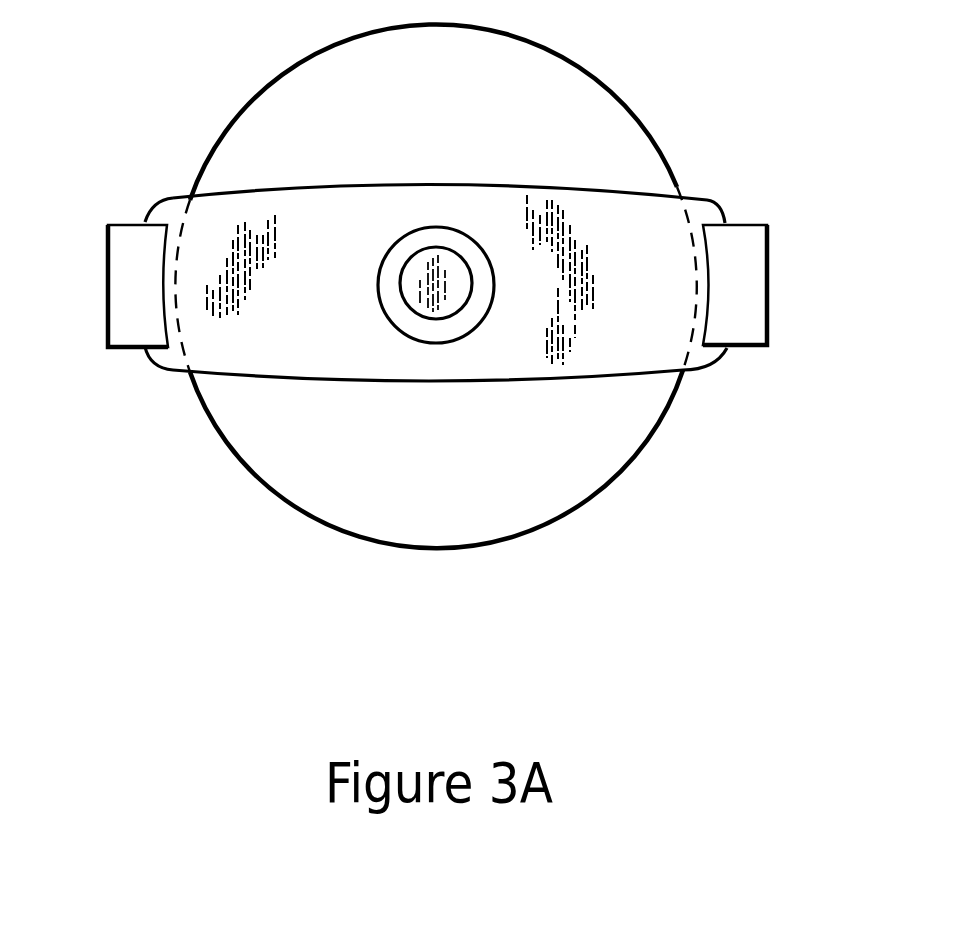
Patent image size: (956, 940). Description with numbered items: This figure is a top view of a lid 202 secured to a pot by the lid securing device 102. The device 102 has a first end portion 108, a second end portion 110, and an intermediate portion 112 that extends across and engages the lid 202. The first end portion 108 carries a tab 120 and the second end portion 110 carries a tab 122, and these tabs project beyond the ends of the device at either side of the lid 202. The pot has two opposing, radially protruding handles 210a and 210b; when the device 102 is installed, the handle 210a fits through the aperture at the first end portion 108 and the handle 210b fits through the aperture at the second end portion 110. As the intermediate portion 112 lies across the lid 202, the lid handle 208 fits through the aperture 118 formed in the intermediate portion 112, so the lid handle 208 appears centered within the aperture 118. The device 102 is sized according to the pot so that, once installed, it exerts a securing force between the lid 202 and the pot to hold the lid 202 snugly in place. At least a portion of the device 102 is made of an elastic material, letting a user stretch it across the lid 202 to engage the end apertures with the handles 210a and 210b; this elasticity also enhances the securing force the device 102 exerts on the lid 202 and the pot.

The lid securing device 102 is at (612, 378).
The first end portion 108 is at (227, 207).
The second end portion 110 is at (670, 208).
The intermediate portion 112 is at (340, 207).
The aperture 118 is at (398, 310).
The tab 120 is at (144, 221).
The tab 122 is at (712, 210).
The lid 202 is at (628, 103).
The lid handle 208 is at (447, 260).
The handle 210a is at (107, 343).
The handle 210b is at (767, 323).